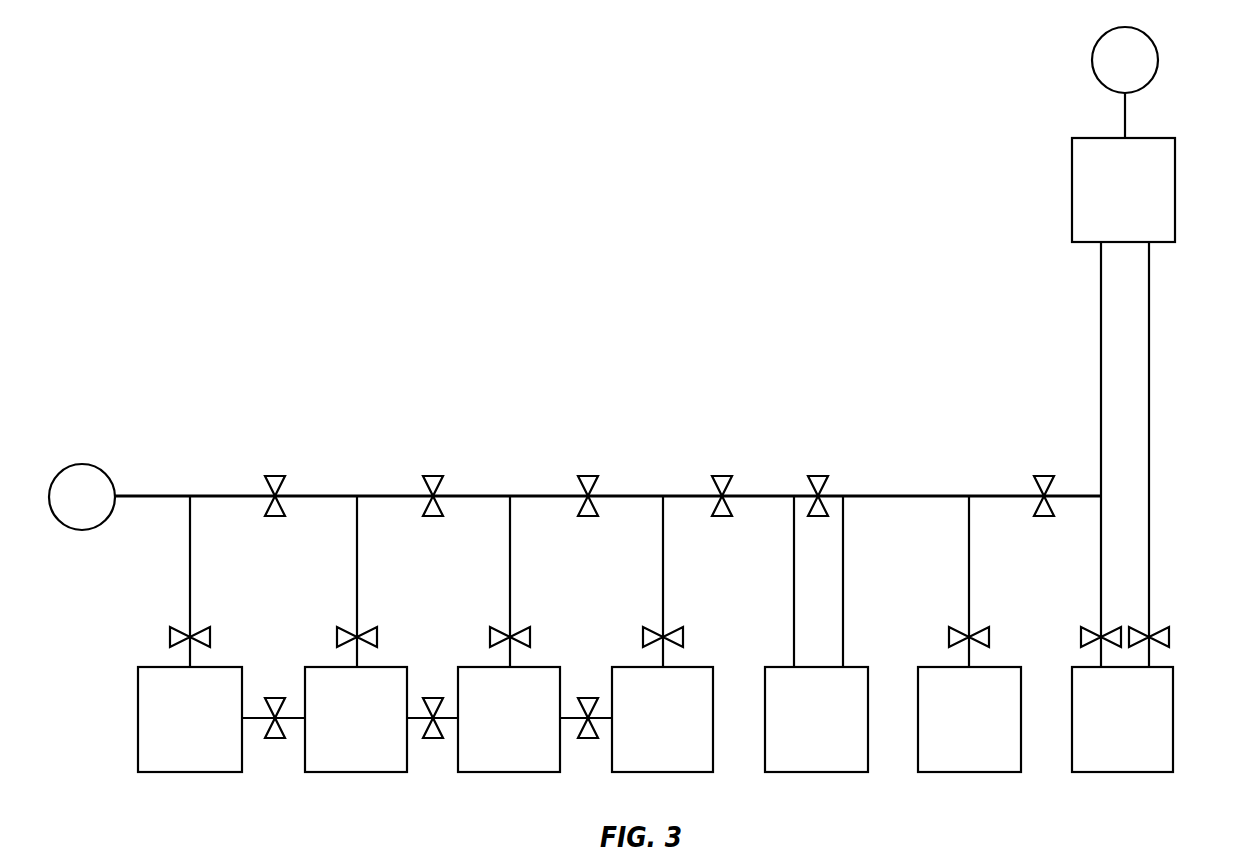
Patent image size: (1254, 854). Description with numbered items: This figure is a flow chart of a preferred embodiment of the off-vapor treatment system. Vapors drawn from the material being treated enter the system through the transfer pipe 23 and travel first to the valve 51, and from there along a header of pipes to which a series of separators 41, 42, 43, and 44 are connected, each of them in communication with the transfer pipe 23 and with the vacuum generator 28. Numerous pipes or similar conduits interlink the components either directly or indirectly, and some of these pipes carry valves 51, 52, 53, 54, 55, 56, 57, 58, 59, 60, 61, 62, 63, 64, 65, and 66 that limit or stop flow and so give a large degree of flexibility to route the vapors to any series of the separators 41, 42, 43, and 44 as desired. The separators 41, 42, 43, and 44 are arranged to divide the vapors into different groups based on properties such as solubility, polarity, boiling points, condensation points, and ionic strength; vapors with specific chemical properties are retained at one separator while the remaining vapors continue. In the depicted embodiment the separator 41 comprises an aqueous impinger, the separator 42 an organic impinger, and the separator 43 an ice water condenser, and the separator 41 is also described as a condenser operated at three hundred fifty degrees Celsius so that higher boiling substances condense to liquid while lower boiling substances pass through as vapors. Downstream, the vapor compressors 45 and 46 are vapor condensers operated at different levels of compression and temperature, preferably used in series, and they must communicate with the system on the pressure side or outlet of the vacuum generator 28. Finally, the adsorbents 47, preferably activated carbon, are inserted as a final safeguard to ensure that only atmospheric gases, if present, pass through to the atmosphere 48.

The transfer pipe 23 is at (67, 510).
The vacuum generator 28 is at (801, 736).
The separator 41 is at (175, 736).
The separator 42 is at (341, 736).
The separator 43 is at (494, 736).
The separator 44 is at (647, 736).
The vapor compressor 45 is at (954, 736).
The vapor compressor 46 is at (1107, 736).
The adsorbents 47 is at (1109, 204).
The atmosphere 48 is at (1110, 73).
The valve 51 is at (301, 473).
The valve 52 is at (459, 473).
The valve 53 is at (614, 473).
The valve 54 is at (748, 473).
The valve 55 is at (844, 473).
The valve 56 is at (1018, 473).
The valve 57 is at (212, 621).
The valve 58 is at (379, 621).
The valve 59 is at (532, 621).
The valve 60 is at (696, 647).
The valve 61 is at (1003, 648).
The valve 62 is at (1070, 611).
The valve 63 is at (281, 685).
The valve 64 is at (439, 685).
The valve 65 is at (593, 685).
The valve 66 is at (1183, 648).